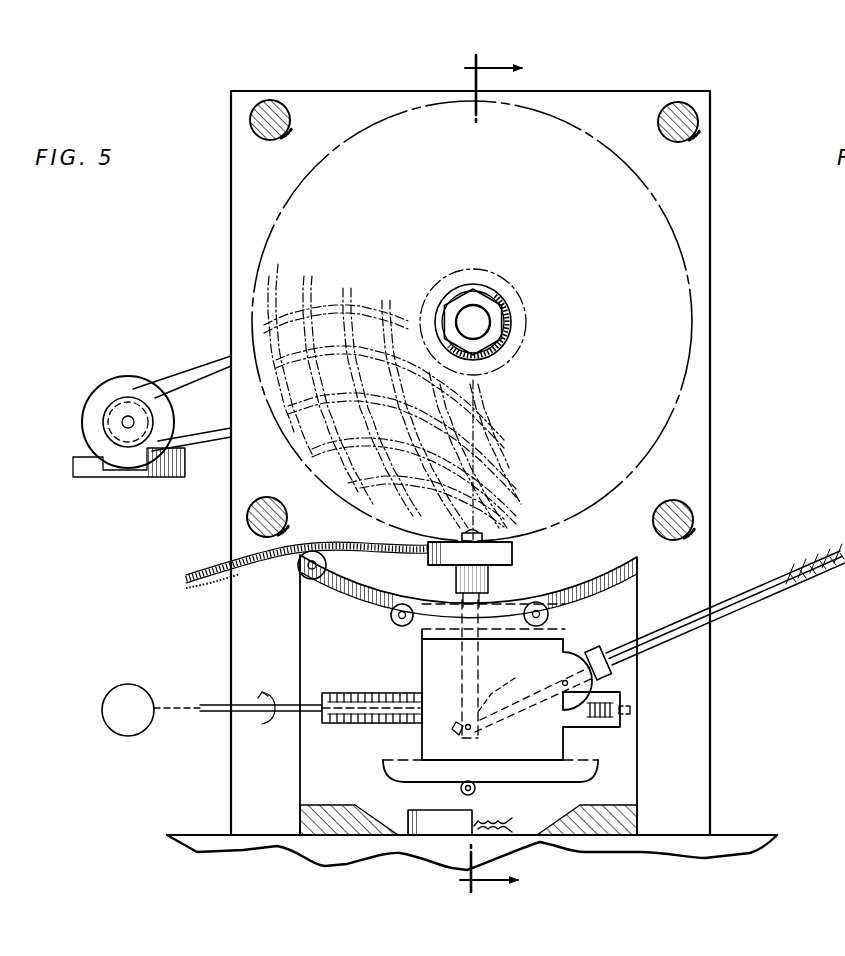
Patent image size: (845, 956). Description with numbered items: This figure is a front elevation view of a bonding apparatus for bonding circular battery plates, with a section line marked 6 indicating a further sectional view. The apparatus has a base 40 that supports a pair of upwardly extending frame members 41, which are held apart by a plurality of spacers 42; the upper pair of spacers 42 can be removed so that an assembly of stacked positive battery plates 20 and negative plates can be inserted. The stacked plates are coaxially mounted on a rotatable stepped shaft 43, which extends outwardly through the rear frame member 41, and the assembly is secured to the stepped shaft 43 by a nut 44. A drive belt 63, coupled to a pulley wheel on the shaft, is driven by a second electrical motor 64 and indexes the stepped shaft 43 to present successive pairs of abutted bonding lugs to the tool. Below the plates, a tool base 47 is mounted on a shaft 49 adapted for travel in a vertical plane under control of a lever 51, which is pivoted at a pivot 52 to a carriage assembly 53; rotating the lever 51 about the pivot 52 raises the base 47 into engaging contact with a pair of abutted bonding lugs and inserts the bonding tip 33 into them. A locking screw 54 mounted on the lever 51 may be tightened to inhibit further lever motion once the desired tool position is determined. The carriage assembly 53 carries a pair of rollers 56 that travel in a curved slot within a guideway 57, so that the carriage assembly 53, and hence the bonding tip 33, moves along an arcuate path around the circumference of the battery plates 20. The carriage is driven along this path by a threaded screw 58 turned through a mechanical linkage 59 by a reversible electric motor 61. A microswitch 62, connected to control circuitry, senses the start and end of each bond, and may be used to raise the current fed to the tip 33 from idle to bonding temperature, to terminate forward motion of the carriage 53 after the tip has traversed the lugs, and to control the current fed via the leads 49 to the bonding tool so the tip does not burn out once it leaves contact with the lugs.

The section line 6- 6 is at (507, 474).
The positive battery plate 20 is at (252, 236).
The bonding tip 33 is at (480, 535).
The base 40 is at (735, 838).
The frame member 41 is at (693, 448).
The spacer 42 is at (254, 110).
The stepped shaft 43 is at (480, 316).
The nut 44 is at (511, 332).
The base 47 is at (515, 556).
The shaft 49 is at (200, 574).
The lever 51 is at (752, 604).
The pivot 52 is at (565, 686).
The carriage assembly 53 is at (422, 656).
The locking screw 54 is at (613, 675).
The roller 56 is at (390, 613).
The guideway 57 is at (315, 651).
The threaded screw 58 is at (360, 720).
The mechanical linkage 59 is at (206, 716).
The reversible electric motor 61 is at (110, 691).
The microswitch 62 is at (478, 812).
The drive belt 63 is at (212, 360).
The second electrical motor 64 is at (96, 400).